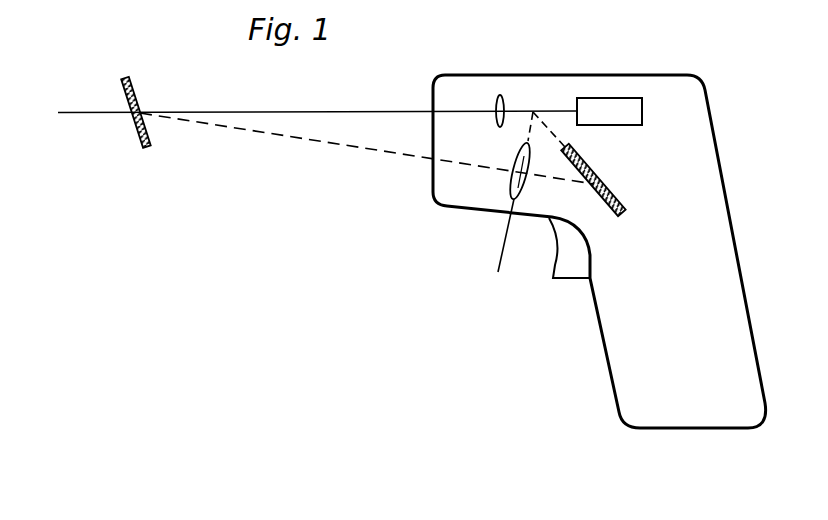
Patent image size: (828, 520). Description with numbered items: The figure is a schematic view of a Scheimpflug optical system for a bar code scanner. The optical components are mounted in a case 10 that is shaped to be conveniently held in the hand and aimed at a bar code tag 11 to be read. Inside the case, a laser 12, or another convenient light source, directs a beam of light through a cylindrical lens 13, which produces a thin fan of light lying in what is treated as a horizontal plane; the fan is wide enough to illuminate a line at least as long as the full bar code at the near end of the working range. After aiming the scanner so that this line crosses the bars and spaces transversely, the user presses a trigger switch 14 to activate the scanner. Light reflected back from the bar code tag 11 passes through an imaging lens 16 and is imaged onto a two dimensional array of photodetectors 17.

The case 10 is at (600, 330).
The bar code tag 11 is at (131, 80).
The laser 12 is at (620, 97).
The cylindrical lens 13 is at (504, 96).
The trigger switch 14 is at (550, 263).
The imaging lens 16 is at (508, 182).
The two dimensional array of photodetectors 17 is at (618, 197).